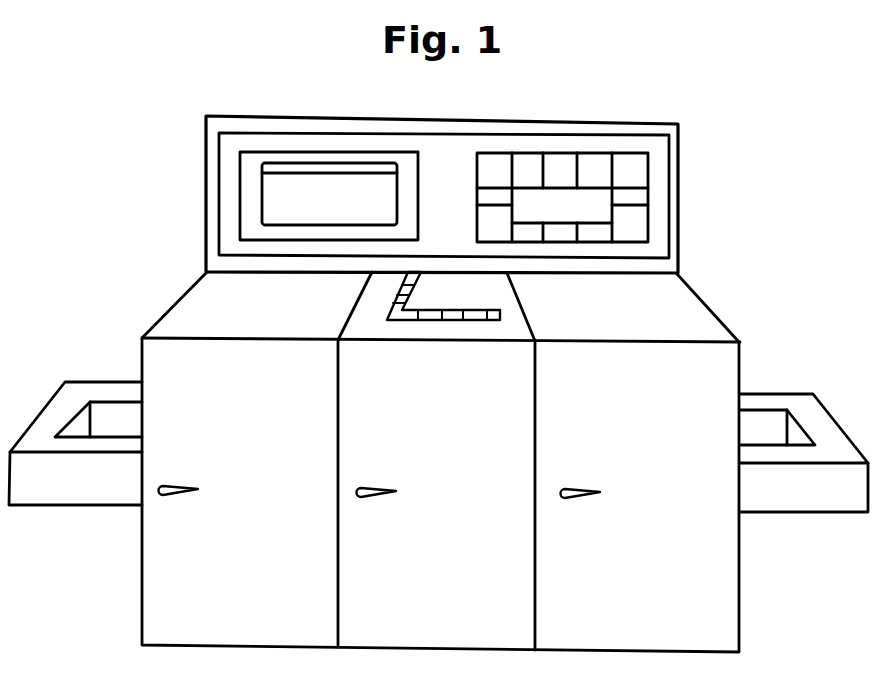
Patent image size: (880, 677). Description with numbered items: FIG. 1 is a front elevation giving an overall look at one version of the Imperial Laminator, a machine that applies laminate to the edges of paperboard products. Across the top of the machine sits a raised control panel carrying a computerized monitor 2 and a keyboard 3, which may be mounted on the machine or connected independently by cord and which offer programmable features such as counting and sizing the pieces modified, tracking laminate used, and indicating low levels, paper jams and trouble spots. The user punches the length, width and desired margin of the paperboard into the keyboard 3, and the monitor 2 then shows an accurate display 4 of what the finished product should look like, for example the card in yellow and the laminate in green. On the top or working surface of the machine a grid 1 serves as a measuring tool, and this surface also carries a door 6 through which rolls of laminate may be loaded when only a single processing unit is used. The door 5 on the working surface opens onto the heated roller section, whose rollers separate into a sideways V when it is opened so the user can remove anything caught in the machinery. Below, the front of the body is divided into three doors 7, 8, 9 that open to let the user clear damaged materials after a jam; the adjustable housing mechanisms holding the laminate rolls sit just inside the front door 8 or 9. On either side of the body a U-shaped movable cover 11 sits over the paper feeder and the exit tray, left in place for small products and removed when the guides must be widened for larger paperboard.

The grid 1 is at (443, 296).
The monitor 2 is at (329, 196).
The keyboard 3 is at (551, 197).
The display 4 is at (329, 194).
The door 5 is at (257, 306).
The top working surface door 6 is at (623, 307).
The door 7 is at (216, 485).
The front door 8 is at (423, 487).
The front door 9 is at (623, 487).
The movable cover 11 is at (438, 447).